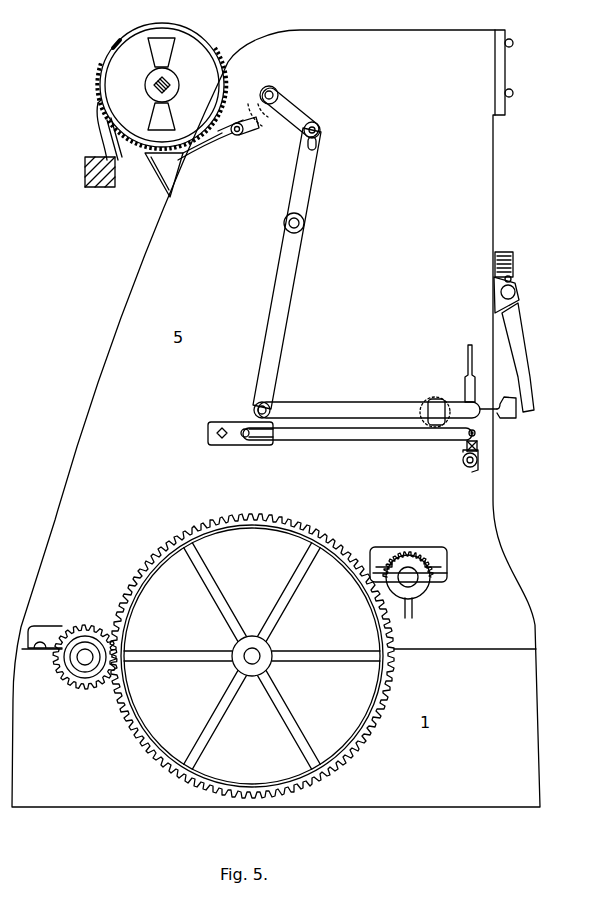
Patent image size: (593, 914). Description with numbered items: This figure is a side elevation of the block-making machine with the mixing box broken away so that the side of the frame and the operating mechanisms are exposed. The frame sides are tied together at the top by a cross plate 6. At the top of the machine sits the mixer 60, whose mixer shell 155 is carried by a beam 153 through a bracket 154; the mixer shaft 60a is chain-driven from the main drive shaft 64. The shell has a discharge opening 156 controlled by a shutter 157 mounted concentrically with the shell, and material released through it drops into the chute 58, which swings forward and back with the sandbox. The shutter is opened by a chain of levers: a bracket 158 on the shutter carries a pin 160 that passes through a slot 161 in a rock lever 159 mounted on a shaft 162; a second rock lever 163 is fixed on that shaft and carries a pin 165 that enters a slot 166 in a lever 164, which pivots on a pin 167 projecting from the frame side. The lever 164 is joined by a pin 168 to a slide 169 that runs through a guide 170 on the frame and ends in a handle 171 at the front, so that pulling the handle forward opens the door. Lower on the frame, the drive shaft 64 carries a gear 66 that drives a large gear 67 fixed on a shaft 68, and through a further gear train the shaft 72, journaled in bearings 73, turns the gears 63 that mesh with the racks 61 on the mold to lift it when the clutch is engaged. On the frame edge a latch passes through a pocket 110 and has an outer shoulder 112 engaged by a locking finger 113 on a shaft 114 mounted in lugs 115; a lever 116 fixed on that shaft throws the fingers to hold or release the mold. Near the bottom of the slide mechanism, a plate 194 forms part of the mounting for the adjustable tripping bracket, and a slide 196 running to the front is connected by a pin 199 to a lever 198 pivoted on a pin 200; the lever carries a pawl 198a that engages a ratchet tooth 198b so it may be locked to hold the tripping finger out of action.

The cross plate 6 is at (505, 75).
The chute 58 is at (170, 172).
The mixer 60 is at (187, 58).
The mixer shaft 60a is at (176, 86).
The rack 61 is at (440, 556).
The gear 63 is at (393, 553).
The shaft 64 is at (85, 650).
The gear 66 is at (70, 688).
The gear 67 is at (145, 748).
The shaft 68 is at (256, 660).
The shaft 72 is at (418, 585).
The bearing 73 is at (420, 577).
The pocket 110 is at (499, 252).
The shoulder 112 is at (514, 262).
The locking finger 113 is at (512, 279).
The shaft 114 is at (516, 292).
The lug 115 is at (496, 296).
The lever 116 is at (535, 385).
The beam 153 is at (85, 178).
The bracket 154 is at (99, 140).
The mixer shell 155 is at (112, 44).
The discharge opening 156 is at (156, 165).
The shutter 157 is at (138, 152).
The bracket 158 is at (242, 118).
The rock lever 159 is at (267, 112).
The pin 160 is at (239, 135).
The slot 161 is at (255, 124).
The shaft 162 is at (276, 92).
The rock lever 163 is at (305, 113).
The lever 164 is at (305, 174).
The pin 165 is at (321, 128).
The slot 166 is at (318, 144).
The pin 167 is at (300, 224).
The pin 168 is at (270, 405).
The slide 169 is at (371, 404).
The guide 170 is at (452, 382).
The handle 171 is at (516, 414).
The plate 194 is at (228, 446).
The slide 196 is at (353, 440).
The lever 198 is at (467, 345).
The pawl 198a is at (468, 437).
The ratchet tooth 198b is at (467, 450).
The pin 199 is at (476, 434).
The pin 200 is at (477, 468).